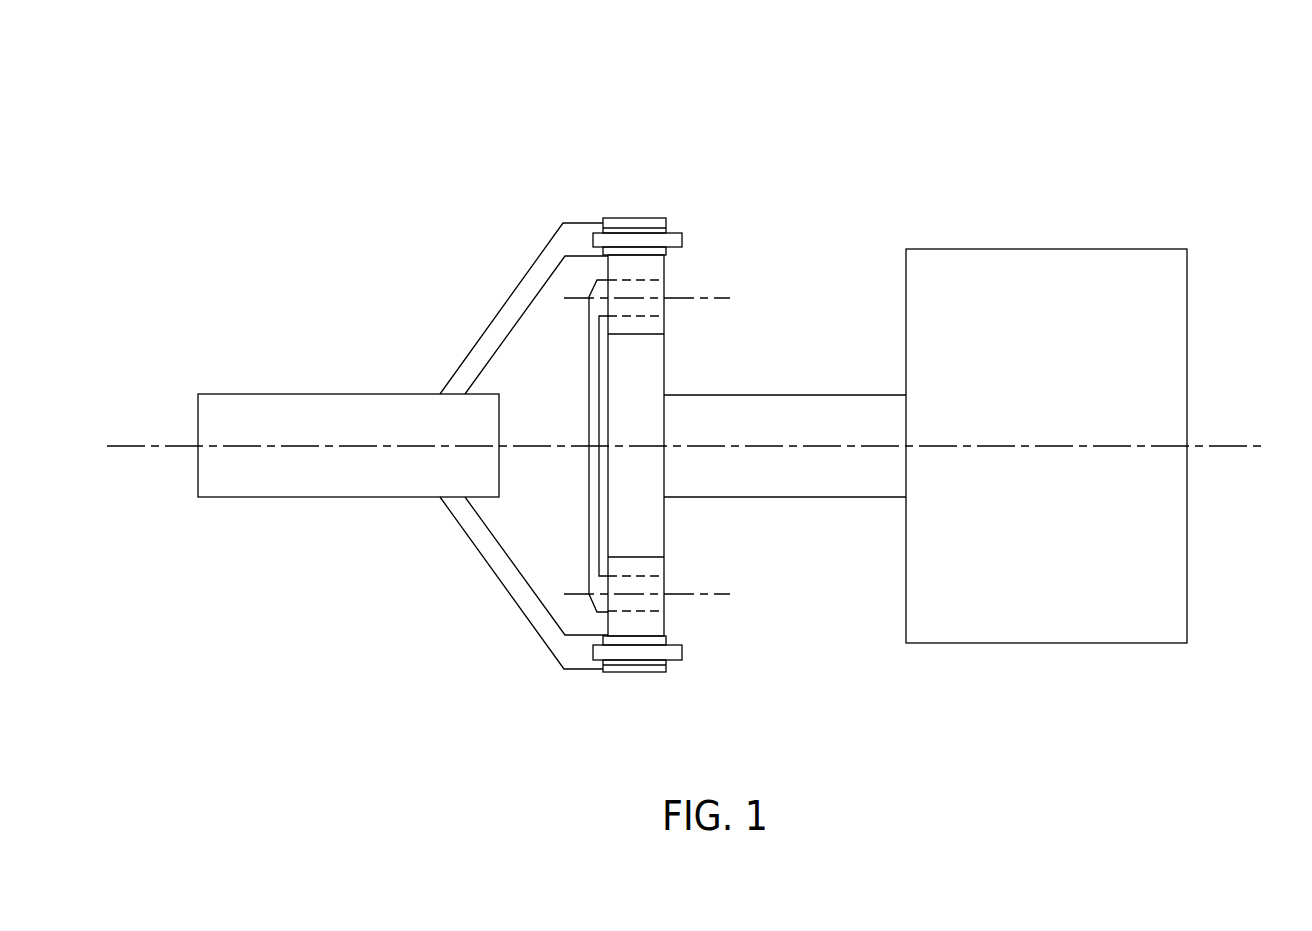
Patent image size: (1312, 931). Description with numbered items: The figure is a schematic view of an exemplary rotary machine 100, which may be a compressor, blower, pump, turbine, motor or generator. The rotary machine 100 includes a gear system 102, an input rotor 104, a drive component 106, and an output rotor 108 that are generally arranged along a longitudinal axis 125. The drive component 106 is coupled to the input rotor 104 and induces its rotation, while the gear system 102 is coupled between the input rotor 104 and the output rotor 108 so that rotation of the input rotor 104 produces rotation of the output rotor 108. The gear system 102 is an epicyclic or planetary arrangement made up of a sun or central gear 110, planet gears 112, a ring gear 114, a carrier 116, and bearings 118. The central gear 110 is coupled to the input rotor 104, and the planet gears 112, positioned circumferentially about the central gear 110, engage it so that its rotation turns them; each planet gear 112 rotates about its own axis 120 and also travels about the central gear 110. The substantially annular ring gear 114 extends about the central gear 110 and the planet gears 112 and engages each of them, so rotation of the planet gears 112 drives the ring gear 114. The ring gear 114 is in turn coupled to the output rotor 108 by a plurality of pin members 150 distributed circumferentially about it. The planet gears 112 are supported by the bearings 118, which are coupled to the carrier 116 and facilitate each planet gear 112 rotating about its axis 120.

The rotary machine 100 is at (1180, 112).
The gear system 102 is at (614, 185).
The input rotor 104 is at (860, 497).
The drive component 106 is at (988, 249).
The output rotor 108 is at (232, 394).
The central gear 110 is at (655, 360).
The planet gears 112 is at (642, 268).
The ring gear 114 is at (614, 672).
The carrier 116 is at (589, 360).
The bearings 118 is at (657, 288).
The axis 120 is at (698, 300).
The longitudinal axis 125 is at (125, 446).
The pin members 150 is at (677, 233).